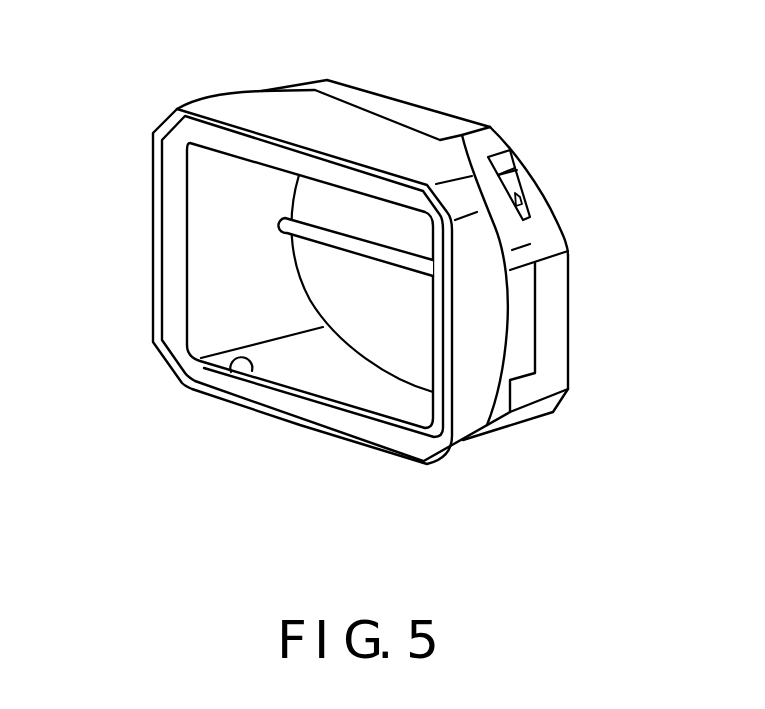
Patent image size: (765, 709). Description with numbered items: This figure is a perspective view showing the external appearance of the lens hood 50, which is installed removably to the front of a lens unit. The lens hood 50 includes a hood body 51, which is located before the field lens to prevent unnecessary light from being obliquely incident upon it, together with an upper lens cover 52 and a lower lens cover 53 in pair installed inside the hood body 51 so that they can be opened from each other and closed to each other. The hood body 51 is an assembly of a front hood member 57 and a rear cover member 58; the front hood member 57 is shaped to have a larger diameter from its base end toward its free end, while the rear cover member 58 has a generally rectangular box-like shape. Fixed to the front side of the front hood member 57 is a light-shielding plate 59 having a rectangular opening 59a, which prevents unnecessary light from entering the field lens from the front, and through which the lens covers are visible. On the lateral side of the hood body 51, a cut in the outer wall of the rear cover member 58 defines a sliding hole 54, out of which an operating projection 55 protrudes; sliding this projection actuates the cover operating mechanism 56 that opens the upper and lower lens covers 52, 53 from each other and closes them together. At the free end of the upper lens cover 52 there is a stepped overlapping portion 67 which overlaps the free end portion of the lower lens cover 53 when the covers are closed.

The lens hood 50 is at (131, 47).
The hood body 51 is at (407, 316).
The upper lens cover 52 is at (322, 207).
The lower lens cover 53 is at (316, 267).
The sliding hole 54 is at (522, 203).
The operating projection 55 is at (510, 163).
The cover operating mechanism 56 is at (562, 157).
The front hood member 57 is at (488, 412).
The rear cover member 58 is at (538, 410).
The light-shielding plate 59 is at (275, 400).
The rectangular opening 59a is at (230, 367).
The stepped overlapping portion 67 is at (377, 254).